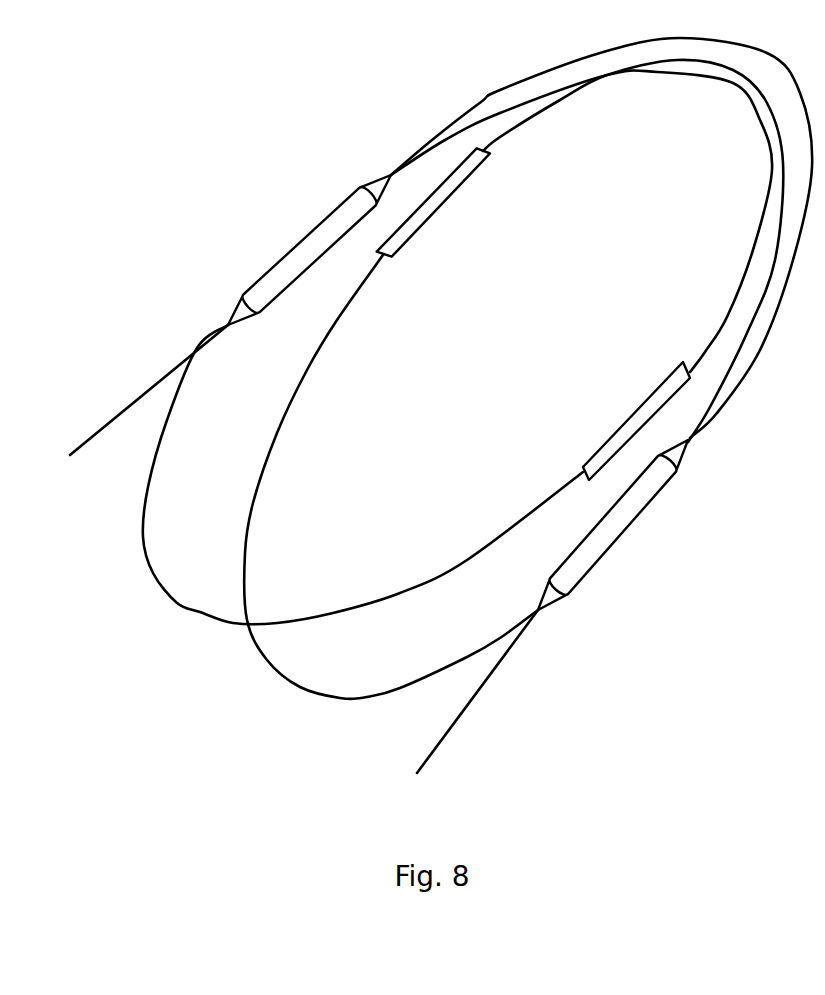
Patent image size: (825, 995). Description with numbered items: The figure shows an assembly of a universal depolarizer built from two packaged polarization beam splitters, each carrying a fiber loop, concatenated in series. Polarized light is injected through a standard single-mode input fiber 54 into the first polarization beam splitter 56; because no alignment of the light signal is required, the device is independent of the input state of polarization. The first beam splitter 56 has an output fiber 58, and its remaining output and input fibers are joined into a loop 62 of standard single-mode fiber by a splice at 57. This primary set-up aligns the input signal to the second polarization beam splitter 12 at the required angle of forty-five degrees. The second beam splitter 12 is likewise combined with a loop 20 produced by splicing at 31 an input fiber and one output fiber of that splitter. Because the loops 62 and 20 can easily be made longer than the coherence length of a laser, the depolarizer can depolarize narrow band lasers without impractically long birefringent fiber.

The polarization beam splitter 12 is at (644, 530).
The loop 20 is at (337, 709).
The splice 31 is at (453, 183).
The input fiber 54 is at (157, 380).
The first polarization beam splitter 56 is at (278, 228).
The splice 57 is at (628, 432).
The output fiber 58 is at (481, 102).
The loop 62 is at (156, 611).